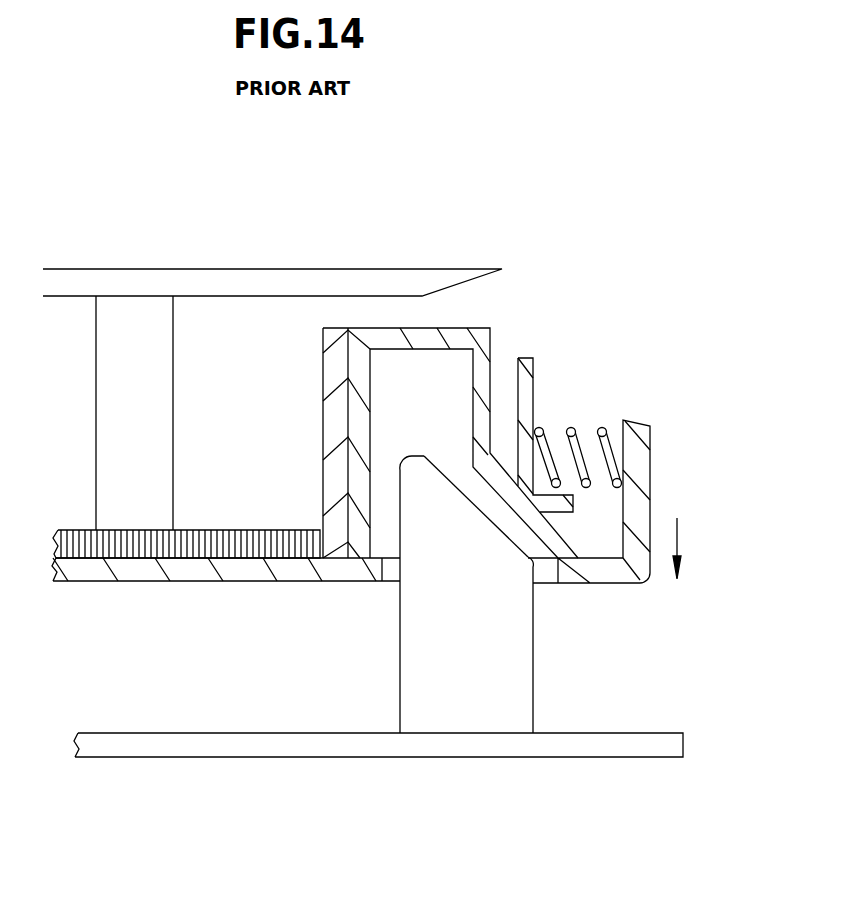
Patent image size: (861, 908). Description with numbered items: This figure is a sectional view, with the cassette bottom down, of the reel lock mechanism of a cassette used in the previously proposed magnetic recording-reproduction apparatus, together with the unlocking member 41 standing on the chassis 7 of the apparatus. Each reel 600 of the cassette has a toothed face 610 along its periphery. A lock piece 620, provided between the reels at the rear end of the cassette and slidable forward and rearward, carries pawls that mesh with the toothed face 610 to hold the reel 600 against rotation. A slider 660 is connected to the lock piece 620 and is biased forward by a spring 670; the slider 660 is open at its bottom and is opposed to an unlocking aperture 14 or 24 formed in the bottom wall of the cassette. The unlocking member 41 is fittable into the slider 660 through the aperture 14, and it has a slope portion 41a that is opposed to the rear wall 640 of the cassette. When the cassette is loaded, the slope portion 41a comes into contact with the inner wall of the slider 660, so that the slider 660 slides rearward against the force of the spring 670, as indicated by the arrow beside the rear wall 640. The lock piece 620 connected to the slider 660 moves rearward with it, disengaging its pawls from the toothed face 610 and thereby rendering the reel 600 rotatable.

The reel 600 is at (377, 276).
The toothed face 610 is at (198, 530).
The lock piece 620 is at (335, 418).
The slider 660 is at (433, 333).
The spring 670 is at (576, 428).
The rear wall 640 is at (652, 472).
The unlocking aperture 14 is at (590, 597).
The unlocking aperture 24 is at (545, 570).
The unlocking member 41 is at (514, 554).
The slope portion 41a is at (425, 458).
The chassis 7 is at (638, 745).